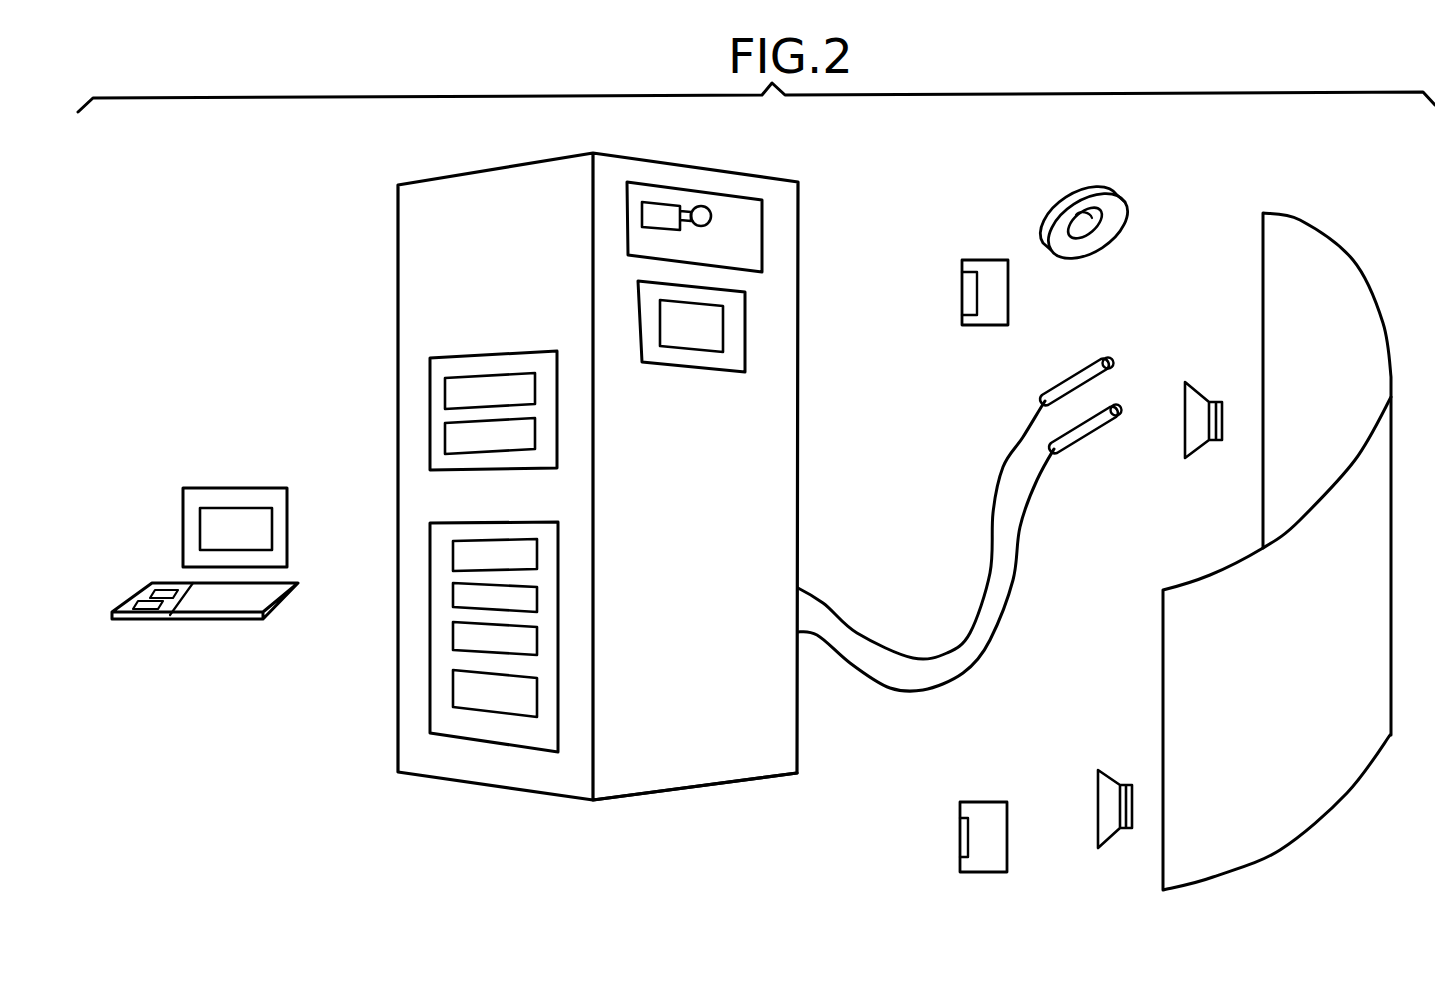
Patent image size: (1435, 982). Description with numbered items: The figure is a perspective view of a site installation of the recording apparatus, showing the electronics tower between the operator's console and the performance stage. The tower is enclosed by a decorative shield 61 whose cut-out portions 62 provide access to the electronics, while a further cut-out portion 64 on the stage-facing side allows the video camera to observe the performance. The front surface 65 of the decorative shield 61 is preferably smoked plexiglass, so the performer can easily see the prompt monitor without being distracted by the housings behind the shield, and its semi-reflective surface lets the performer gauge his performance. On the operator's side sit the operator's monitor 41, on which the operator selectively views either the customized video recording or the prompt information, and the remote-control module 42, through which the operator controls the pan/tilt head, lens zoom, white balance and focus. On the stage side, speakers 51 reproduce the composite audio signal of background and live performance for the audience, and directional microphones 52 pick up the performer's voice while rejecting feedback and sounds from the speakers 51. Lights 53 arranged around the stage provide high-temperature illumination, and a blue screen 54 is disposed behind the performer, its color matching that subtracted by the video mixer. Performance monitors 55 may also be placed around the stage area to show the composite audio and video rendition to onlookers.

The operator's monitor 41 is at (277, 488).
The remote-control module 42 is at (218, 620).
The speakers 51 is at (1203, 395).
The directional microphones 52 is at (1080, 370).
The lights 53 is at (1108, 195).
The screen 54 is at (1355, 258).
The performance monitors 55 is at (973, 267).
The decorative shield 61 is at (407, 203).
The cut-out portions 62 is at (432, 357).
The cut-out portion 64 is at (752, 243).
The front surface 65 is at (703, 772).